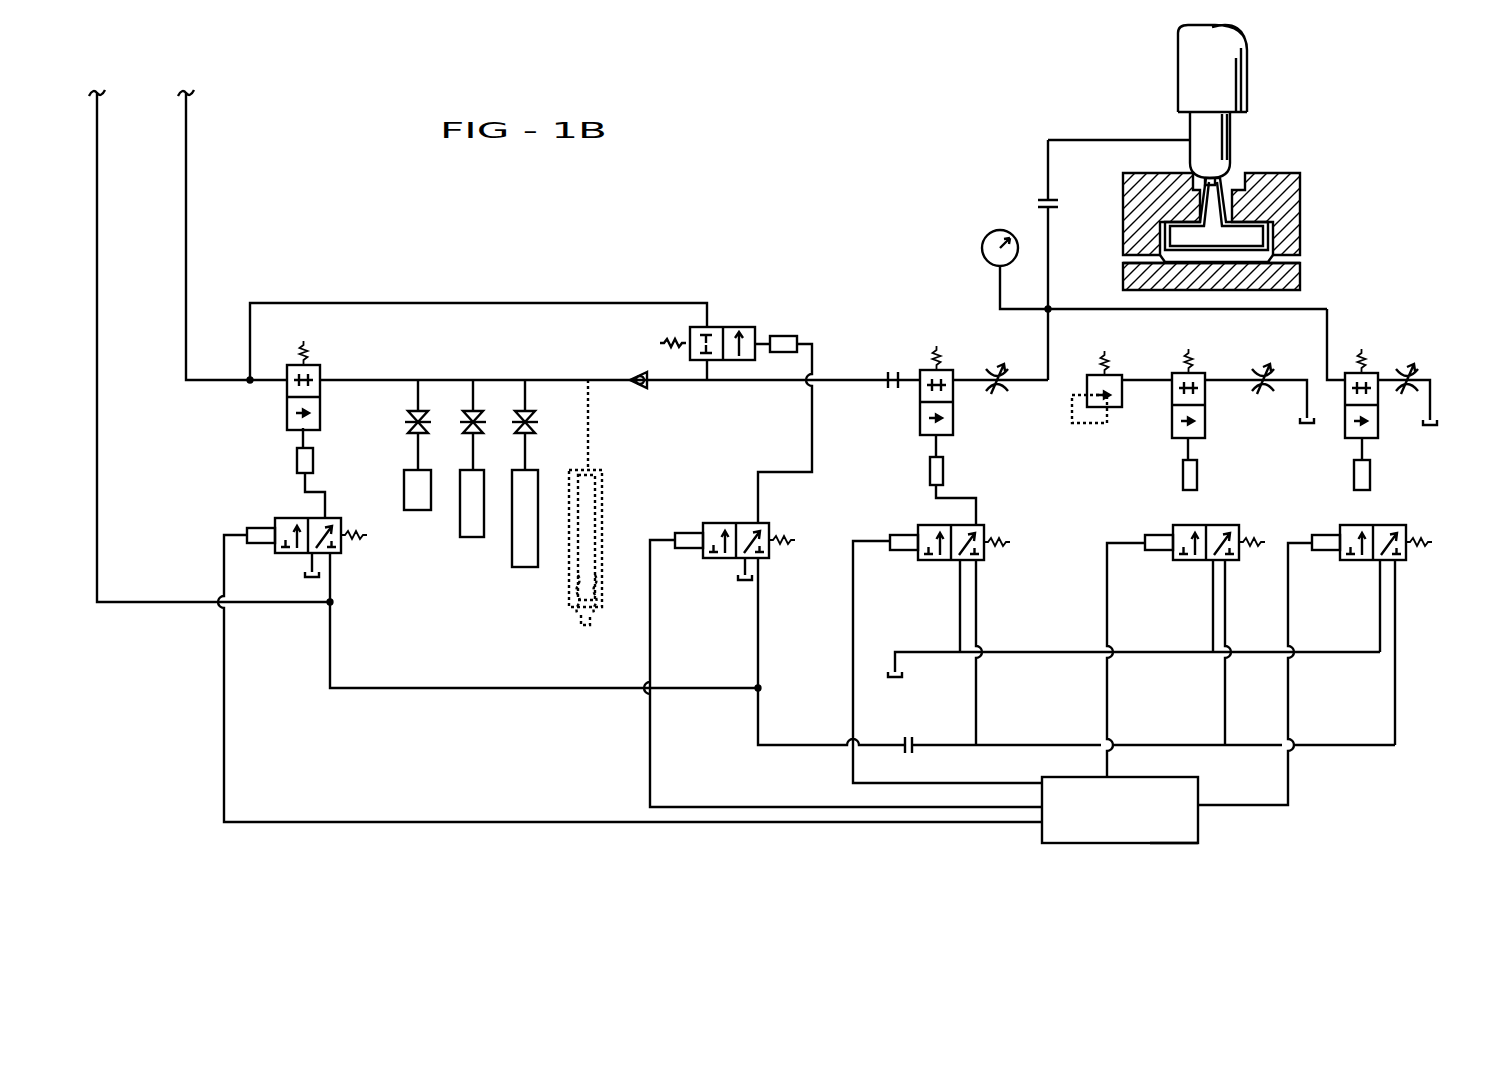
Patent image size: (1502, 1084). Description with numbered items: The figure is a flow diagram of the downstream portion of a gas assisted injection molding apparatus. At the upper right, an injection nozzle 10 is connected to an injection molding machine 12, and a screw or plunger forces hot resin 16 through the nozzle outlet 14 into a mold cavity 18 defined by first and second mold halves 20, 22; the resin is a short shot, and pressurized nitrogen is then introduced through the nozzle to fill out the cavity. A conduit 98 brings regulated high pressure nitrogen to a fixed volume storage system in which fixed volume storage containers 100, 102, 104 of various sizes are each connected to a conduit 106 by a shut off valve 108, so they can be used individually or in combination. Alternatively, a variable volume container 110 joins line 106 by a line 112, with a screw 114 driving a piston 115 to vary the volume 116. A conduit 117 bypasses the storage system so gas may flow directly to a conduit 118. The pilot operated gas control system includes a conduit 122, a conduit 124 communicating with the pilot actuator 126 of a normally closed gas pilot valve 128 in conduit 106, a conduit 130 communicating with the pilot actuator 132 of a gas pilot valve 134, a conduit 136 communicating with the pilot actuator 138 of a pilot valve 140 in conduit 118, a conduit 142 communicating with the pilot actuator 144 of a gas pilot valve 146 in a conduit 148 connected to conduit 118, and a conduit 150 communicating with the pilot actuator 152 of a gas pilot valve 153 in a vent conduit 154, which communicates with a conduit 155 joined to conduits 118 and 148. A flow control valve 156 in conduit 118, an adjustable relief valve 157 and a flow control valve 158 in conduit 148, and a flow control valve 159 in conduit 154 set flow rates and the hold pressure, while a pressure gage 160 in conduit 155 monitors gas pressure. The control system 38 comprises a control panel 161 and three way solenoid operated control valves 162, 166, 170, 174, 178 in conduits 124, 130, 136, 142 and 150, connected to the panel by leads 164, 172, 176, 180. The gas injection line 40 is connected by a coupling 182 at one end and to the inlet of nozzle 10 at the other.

The injection nozzle 10 is at (1236, 143).
The injection molding machine 12 is at (1246, 70).
The nozzle outlet 14 is at (1208, 176).
The hot resin 16 is at (1298, 185).
The mold cavity 18 is at (1285, 225).
The first mold half 20 is at (1285, 255).
The second mold half 22 is at (1300, 280).
The control system 38 is at (1043, 845).
The gas injection line 40 is at (1134, 122).
The conduit 98 is at (186, 178).
The fixed volume storage container 100 is at (420, 510).
The fixed volume storage container 102 is at (470, 537).
The fixed volume storage container 104 is at (521, 567).
The conduit 106 is at (527, 400).
The shut off valve 108 is at (471, 410).
The variable volume container 110 is at (569, 585).
The line 112 is at (598, 440).
The screw 114 is at (596, 622).
The piston 115 is at (585, 547).
The volume 116 is at (598, 492).
The conduit 117 is at (478, 303).
The conduit 118 is at (850, 380).
The conduit 122 is at (97, 300).
The conduit 124 is at (305, 492).
The pilot actuator 126 is at (297, 458).
The gas pilot valve 128 is at (326, 378).
The conduit 130 is at (758, 660).
The pilot actuator 132 is at (790, 336).
The gas pilot valve 134 is at (728, 324).
The conduit 136 is at (974, 700).
The pilot actuator 138 is at (930, 470).
The pilot valve 140 is at (916, 372).
The conduit 142 is at (1225, 706).
The pilot actuator 144 is at (1183, 475).
The gas pilot valve 146 is at (1209, 376).
The conduit 148 is at (1072, 412).
The conduit 150 is at (1395, 706).
The pilot actuator 152 is at (1354, 475).
The gas pilot valve 153 is at (1382, 426).
The vent conduit 154 is at (1383, 380).
The conduit 155 is at (1050, 362).
The flow control valve 156 is at (998, 396).
The adjustable relief valve 157 is at (1126, 376).
The flow control valve 158 is at (1264, 396).
The flow control valve 159 is at (1412, 378).
The pressure gage 160 is at (983, 242).
The control panel 161 is at (1198, 840).
The solenoid operated control valve 162 is at (266, 526).
The lead 164 is at (224, 768).
The solenoid operated control valve 166 is at (731, 520).
The solenoid operated control valve 170 is at (916, 524).
The lead 172 is at (853, 675).
The solenoid operated control valve 174 is at (1205, 564).
The lead 176 is at (1107, 700).
The solenoid operated control valve 178 is at (1357, 523).
The lead 180 is at (1288, 700).
The coupling 182 is at (1045, 198).